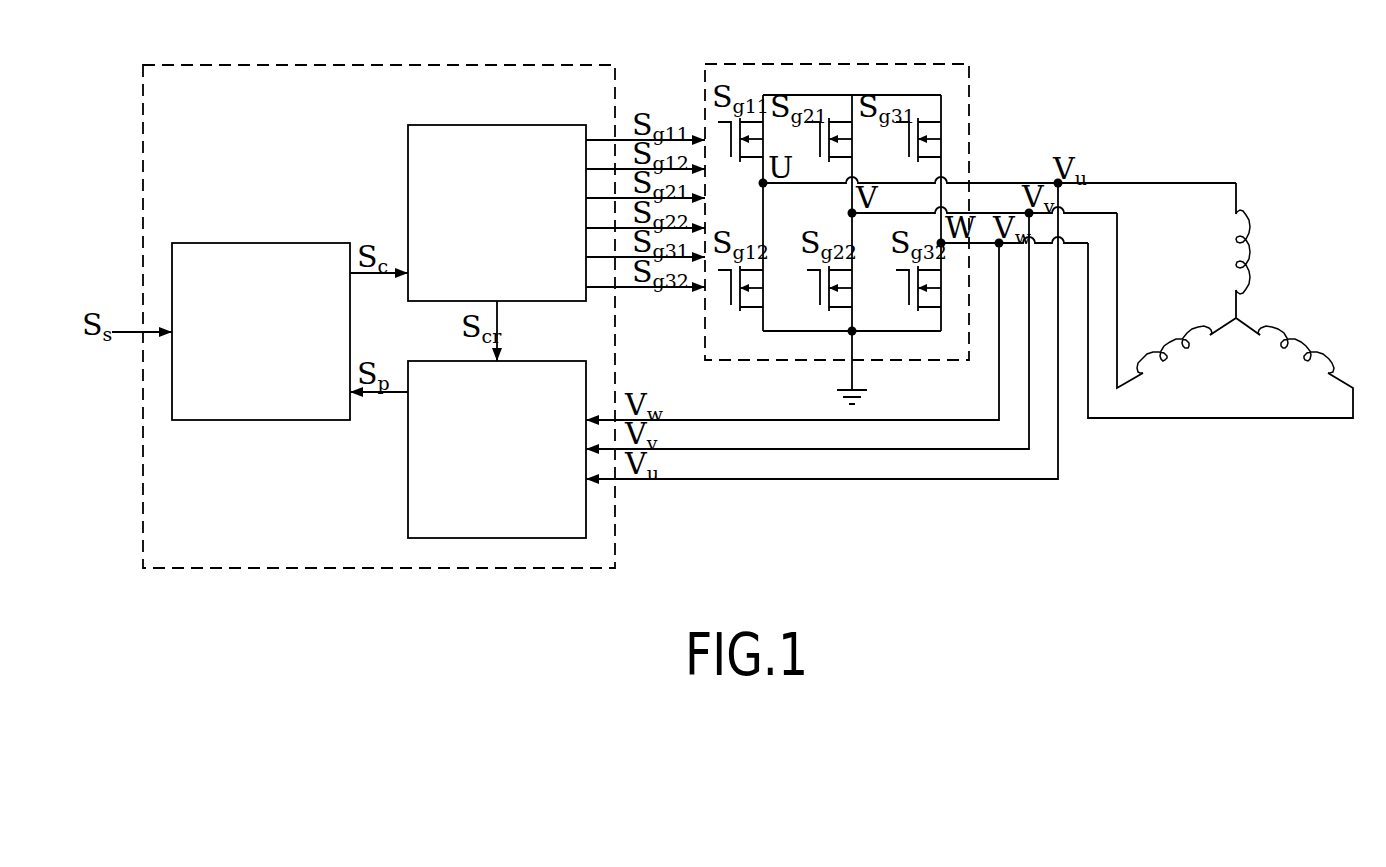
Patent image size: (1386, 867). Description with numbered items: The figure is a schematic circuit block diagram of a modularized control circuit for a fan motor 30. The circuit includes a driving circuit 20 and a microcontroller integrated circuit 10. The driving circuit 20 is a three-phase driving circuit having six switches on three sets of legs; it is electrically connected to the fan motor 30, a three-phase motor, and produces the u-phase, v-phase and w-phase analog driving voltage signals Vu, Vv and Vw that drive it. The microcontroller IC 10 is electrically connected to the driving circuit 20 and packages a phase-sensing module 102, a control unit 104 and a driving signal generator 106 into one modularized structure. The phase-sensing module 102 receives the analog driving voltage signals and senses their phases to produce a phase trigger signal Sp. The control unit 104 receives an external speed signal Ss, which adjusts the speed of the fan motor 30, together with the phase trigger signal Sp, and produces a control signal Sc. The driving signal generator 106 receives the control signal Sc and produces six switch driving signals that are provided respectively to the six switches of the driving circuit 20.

The microcontroller integrated circuit 10 is at (380, 65).
The driving circuit 20 is at (838, 65).
The fan motor 30 is at (1258, 303).
The phase-sensing module 102 is at (508, 368).
The control unit 104 is at (262, 245).
The driving signal generator 106 is at (497, 130).